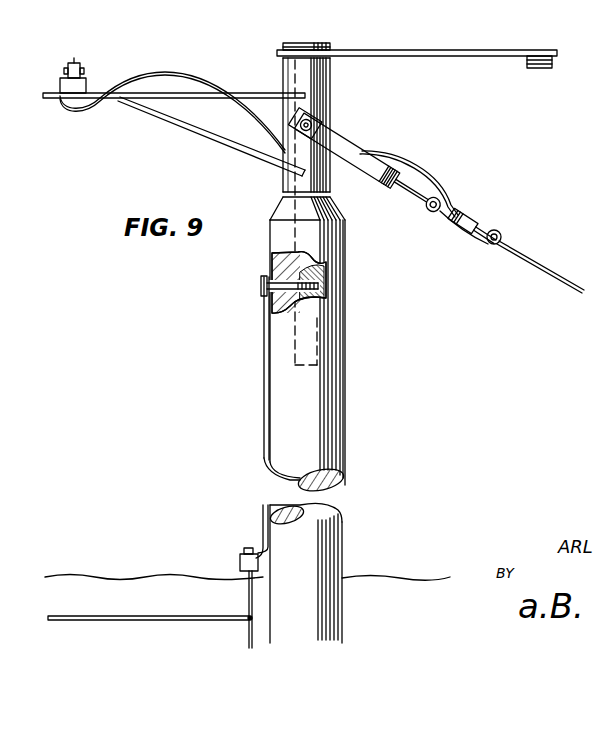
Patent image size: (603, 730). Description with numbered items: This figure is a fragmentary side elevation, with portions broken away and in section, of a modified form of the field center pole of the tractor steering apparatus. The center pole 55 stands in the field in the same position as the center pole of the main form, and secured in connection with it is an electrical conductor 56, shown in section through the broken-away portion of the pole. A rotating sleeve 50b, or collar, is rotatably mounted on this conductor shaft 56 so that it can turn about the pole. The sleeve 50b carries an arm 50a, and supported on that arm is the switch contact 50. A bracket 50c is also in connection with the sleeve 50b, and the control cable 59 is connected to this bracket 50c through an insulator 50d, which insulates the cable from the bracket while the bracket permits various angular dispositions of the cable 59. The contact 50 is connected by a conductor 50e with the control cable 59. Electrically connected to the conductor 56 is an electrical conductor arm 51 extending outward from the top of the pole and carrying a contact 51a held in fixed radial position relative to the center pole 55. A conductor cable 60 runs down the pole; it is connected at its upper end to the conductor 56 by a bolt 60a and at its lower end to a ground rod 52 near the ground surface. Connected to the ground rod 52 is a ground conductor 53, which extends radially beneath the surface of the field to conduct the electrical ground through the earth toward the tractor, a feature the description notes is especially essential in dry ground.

The switch contact 50 is at (73, 62).
The arm 50a is at (172, 99).
The rotating sleeve 50b is at (318, 96).
The bracket 50c is at (350, 148).
The insulator 50d is at (470, 212).
The conductor 50e is at (204, 74).
The electrical conductor arm 51 is at (466, 48).
The contact 51a is at (536, 54).
The ground rod 52 is at (240, 562).
The ground conductor 53 is at (94, 618).
The center pole 55 is at (326, 362).
The electrical conductor 56 is at (330, 262).
The control cable 59 is at (548, 270).
The conductor cable 60 is at (264, 427).
The bolt 60a is at (261, 285).